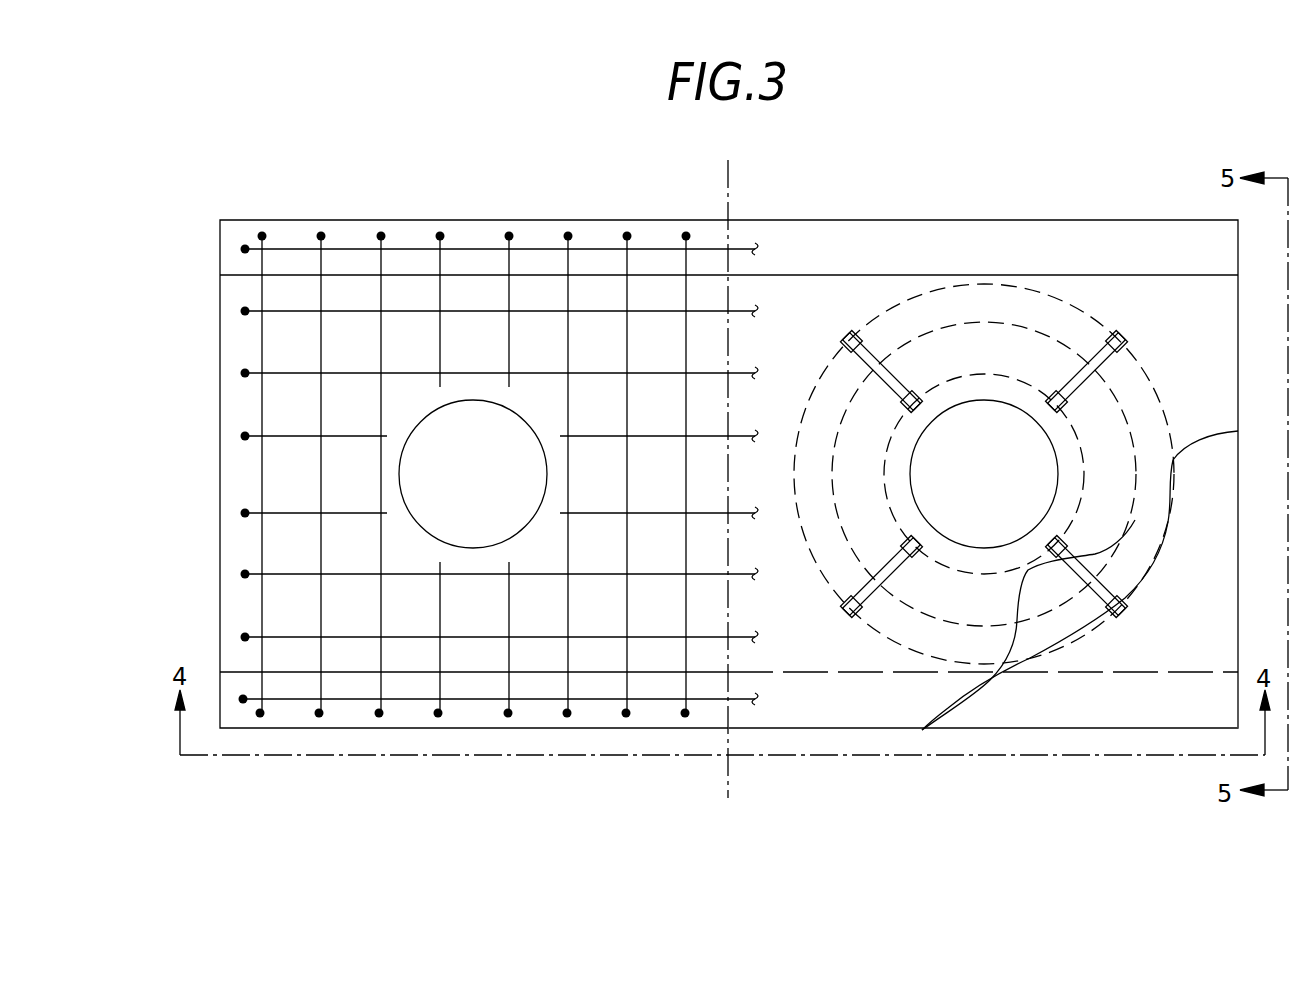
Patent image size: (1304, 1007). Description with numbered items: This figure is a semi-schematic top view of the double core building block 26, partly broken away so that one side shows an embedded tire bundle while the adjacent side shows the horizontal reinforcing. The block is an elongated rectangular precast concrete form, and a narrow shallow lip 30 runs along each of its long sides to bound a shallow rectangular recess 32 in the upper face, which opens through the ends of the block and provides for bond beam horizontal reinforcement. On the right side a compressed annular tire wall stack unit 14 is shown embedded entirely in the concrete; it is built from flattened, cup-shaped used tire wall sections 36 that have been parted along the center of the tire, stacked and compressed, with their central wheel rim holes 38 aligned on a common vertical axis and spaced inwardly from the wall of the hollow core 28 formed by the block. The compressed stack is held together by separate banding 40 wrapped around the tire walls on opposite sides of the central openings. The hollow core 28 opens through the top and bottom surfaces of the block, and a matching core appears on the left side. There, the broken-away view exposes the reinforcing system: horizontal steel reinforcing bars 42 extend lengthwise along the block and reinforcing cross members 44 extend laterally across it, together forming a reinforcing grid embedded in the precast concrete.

The tire stack unit 14 is at (1132, 345).
The double core building block 26 is at (868, 182).
The hollow core 28 is at (399, 466).
The lip 30 is at (953, 231).
The recess 32 is at (1113, 653).
The tire wall section 36 is at (892, 313).
The wheel rim hole 38 is at (893, 503).
The banding 40 is at (903, 363).
The horizontal steel reinforcing bar 42 is at (477, 275).
The reinforcing cross member 44 is at (287, 311).